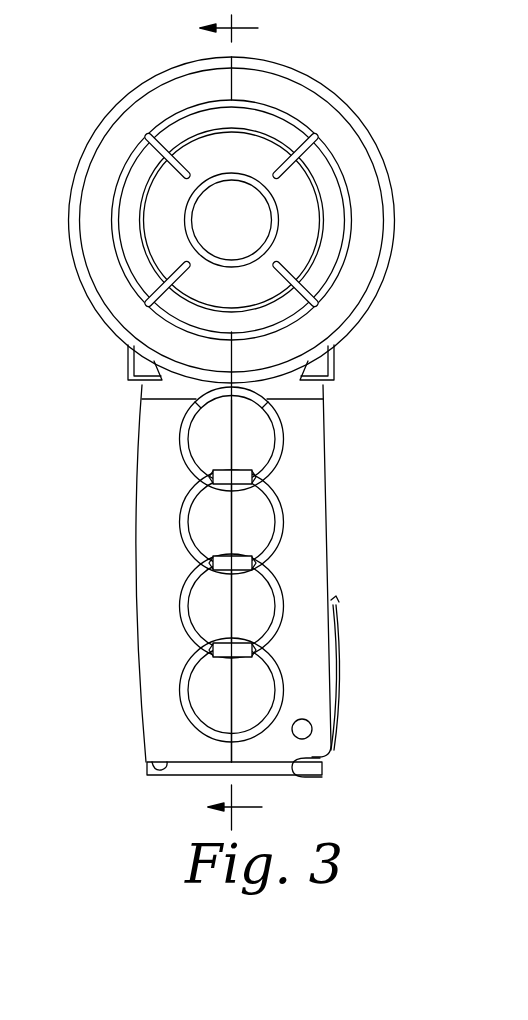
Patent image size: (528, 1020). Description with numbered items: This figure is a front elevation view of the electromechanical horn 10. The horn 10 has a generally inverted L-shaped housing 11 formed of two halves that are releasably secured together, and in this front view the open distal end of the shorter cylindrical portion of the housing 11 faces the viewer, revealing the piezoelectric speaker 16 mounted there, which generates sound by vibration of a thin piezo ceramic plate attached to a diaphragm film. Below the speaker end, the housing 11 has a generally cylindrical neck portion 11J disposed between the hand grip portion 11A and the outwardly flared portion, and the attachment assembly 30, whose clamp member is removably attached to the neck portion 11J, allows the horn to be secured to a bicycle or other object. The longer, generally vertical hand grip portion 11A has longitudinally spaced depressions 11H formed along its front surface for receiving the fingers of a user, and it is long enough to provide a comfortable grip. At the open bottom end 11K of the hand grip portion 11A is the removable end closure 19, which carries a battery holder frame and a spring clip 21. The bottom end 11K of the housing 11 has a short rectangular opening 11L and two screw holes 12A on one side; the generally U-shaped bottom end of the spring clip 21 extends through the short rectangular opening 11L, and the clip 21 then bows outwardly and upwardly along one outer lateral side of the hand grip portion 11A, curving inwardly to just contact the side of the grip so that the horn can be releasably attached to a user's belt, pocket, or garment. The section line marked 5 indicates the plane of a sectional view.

The section line 5- 5 is at (241, 422).
The horn 10 is at (360, 65).
The piezoelectric speaker 16 is at (240, 227).
The attachment assembly 30 is at (358, 357).
The housing 11 is at (235, 573).
The hand grip portion 11A is at (149, 555).
The depressions 11H is at (207, 505).
The neck portion 11J is at (290, 390).
The open bottom end 11K is at (162, 760).
The short rectangular opening 11L is at (306, 783).
The end closure 19 is at (184, 774).
The spring clip 21 is at (338, 683).
The screw holes 12A is at (302, 729).